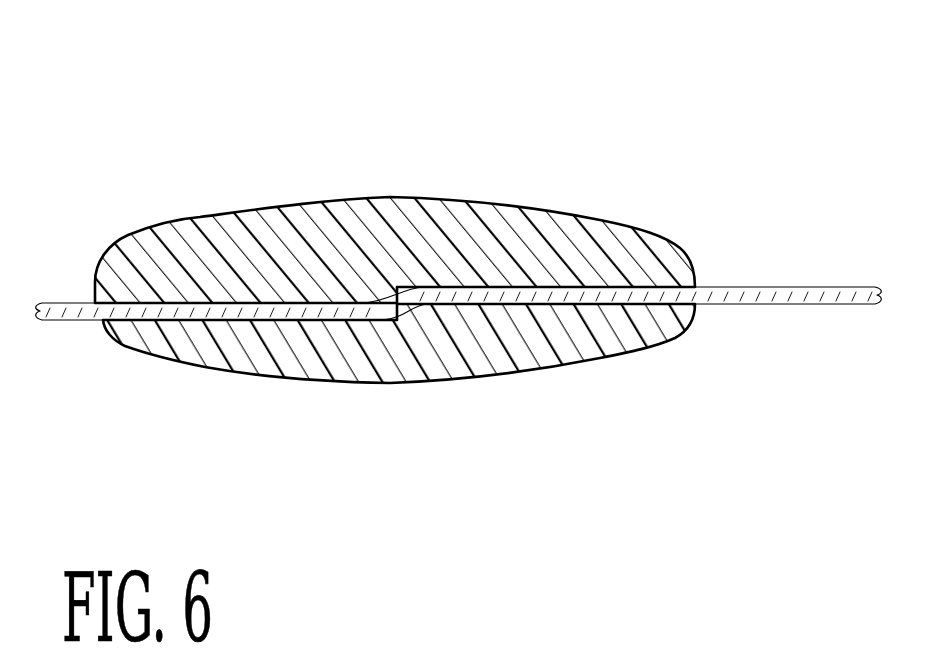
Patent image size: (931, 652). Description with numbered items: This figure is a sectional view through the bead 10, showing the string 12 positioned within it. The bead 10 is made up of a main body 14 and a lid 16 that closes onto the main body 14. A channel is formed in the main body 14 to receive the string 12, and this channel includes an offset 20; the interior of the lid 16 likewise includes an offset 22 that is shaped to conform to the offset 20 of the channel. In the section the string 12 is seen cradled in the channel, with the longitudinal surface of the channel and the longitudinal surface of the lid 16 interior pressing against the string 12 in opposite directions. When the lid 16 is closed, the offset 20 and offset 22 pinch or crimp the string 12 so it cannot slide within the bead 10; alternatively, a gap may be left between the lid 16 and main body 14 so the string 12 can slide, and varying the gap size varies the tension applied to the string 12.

The bead 10 is at (459, 261).
The string 12 is at (768, 295).
The main body 14 is at (233, 342).
The lid 16 is at (205, 243).
The offset 20 is at (397, 325).
The offset 22 is at (397, 290).